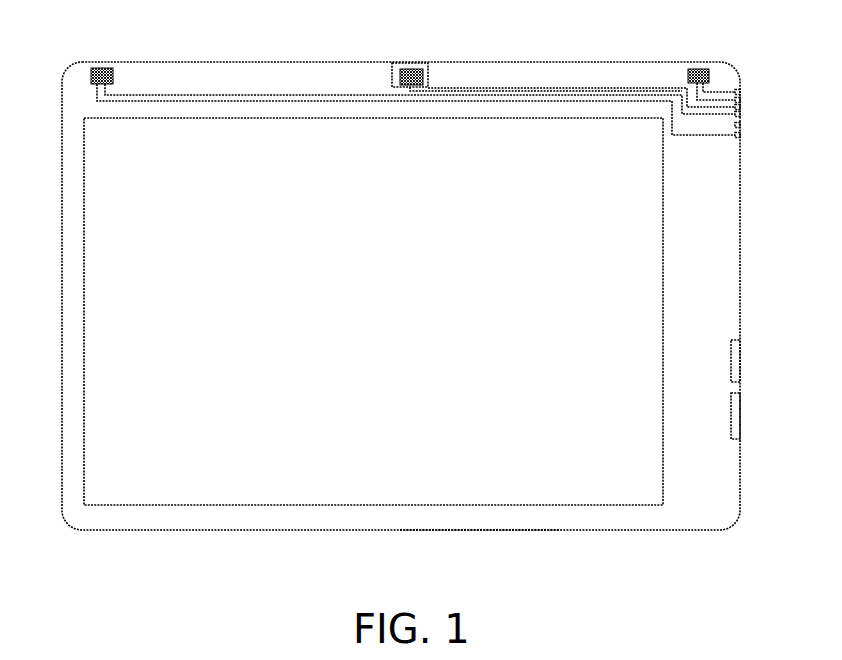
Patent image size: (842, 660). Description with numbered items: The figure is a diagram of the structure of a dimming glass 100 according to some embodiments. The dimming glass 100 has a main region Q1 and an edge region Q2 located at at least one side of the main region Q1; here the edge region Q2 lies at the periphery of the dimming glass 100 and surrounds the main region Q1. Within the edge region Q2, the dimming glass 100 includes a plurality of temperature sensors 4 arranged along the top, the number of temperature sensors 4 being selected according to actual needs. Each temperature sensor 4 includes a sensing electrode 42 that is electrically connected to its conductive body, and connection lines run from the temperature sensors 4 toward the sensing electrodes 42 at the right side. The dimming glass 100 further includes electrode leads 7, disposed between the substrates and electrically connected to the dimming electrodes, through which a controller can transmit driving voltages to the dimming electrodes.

The dimming glass 100 is at (58, 41).
The temperature sensor 4 is at (429, 80).
The sensing electrode 42 is at (741, 93).
The electrode leads 7 is at (736, 361).
The main region Q1 is at (363, 505).
The edge region Q2 is at (485, 530).